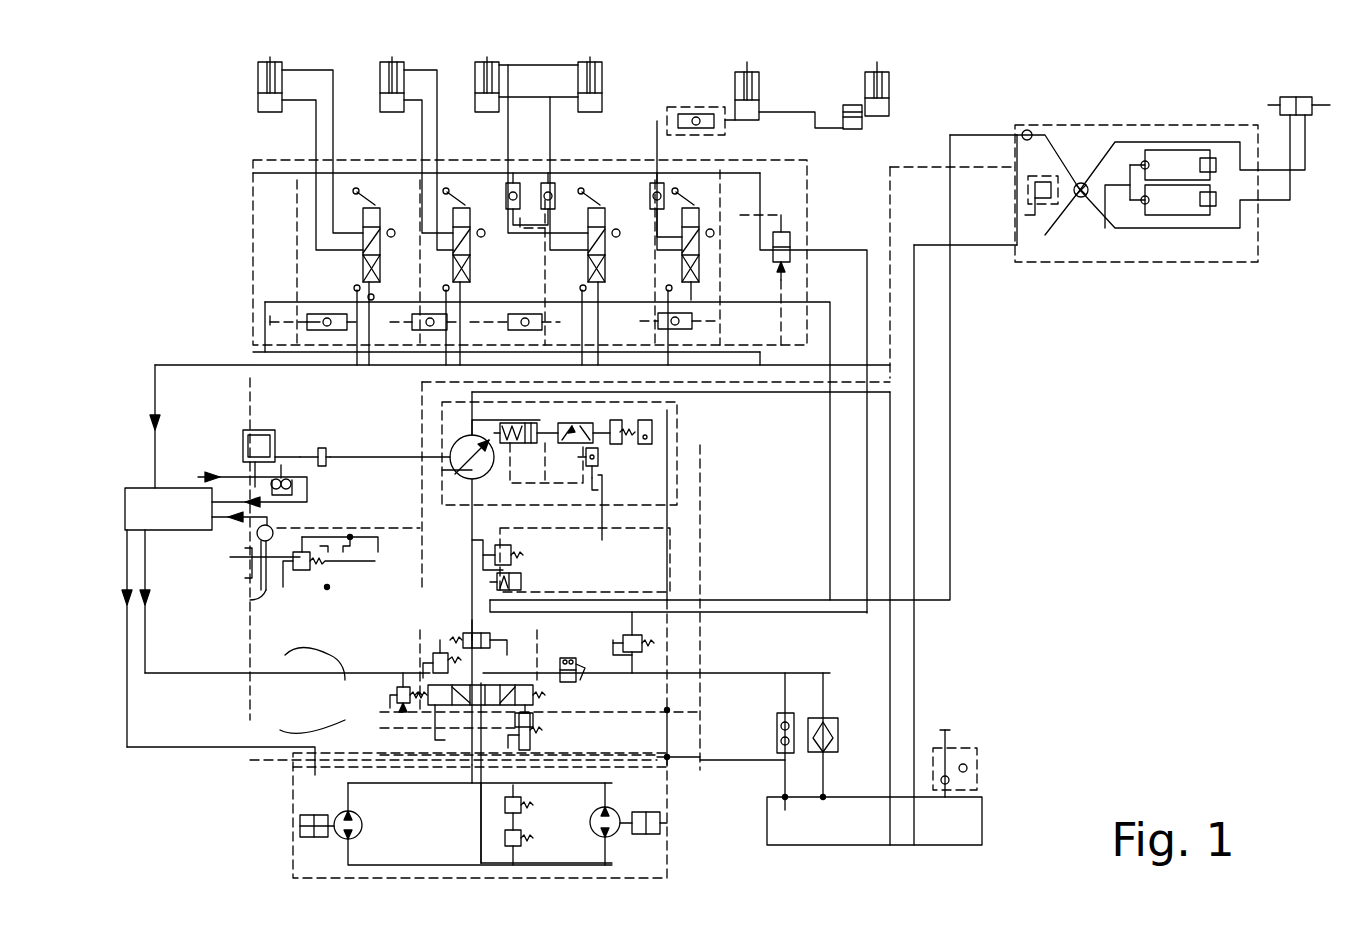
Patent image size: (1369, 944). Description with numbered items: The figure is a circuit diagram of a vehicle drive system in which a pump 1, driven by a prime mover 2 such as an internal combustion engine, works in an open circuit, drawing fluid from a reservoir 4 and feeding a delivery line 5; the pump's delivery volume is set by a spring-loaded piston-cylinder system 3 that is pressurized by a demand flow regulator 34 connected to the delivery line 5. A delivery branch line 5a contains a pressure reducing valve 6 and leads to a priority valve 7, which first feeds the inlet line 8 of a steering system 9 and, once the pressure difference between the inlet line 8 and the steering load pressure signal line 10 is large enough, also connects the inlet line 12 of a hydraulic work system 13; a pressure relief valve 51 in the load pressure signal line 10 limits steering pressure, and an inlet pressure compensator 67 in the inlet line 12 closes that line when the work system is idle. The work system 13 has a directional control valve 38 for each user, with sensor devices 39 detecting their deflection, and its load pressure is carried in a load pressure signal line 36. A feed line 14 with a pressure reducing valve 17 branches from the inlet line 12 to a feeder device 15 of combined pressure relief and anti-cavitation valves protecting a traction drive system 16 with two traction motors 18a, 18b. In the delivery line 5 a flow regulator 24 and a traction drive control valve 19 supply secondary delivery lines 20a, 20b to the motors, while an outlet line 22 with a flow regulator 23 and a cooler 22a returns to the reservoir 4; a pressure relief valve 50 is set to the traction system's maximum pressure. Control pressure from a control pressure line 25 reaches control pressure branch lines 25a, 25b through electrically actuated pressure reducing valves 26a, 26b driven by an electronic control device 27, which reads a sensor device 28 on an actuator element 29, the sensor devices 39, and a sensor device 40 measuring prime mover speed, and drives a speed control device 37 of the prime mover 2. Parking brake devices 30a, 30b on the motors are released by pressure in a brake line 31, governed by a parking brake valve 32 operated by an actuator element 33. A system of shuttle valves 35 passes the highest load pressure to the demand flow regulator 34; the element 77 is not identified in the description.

The pump 1 is at (450, 455).
The prime mover 2 is at (258, 430).
The spring-loaded piston-cylinder system 3 is at (460, 410).
The reservoir 4 is at (985, 815).
The delivery line 5 is at (440, 518).
The delivery branch line 5a is at (515, 545).
The pressure reducing valve 6 is at (602, 540).
The priority valve 7 is at (521, 582).
The inlet line 8 is at (628, 590).
The steering system 9 is at (1104, 247).
The load pressure signal line 10 is at (780, 365).
The inlet line 12 is at (770, 630).
The hydraulic work system 13 is at (822, 182).
The feed line 14 is at (633, 738).
The feeder device 15 is at (490, 828).
The traction drive system 16 is at (275, 866).
The pressure reducing valve 17 is at (732, 650).
The traction motor 18a is at (365, 840).
The traction motor 18b is at (640, 835).
The traction drive control valve 19 is at (437, 712).
The secondary delivery line 20a is at (470, 775).
The secondary delivery line 20b is at (480, 850).
The outlet line 22 is at (648, 640).
The cooler 22a is at (867, 728).
The flow regulator 23 is at (580, 680).
The flow regulator 24 is at (498, 640).
The control pressure line 25 is at (390, 528).
The control pressure branch line 25a is at (287, 658).
The control pressure branch line 25b is at (236, 731).
The pressure reducing valve 26a is at (397, 700).
The pressure reducing valve 26b is at (548, 736).
The electronic control device 27 is at (727, 697).
The sensor device 28 is at (273, 530).
The actuator element 29 is at (252, 600).
The parking brake device 30a is at (300, 826).
The parking brake device 30b is at (665, 820).
The brake line 31 is at (310, 748).
The parking brake valve 32 is at (300, 570).
The actuator element 33 is at (240, 557).
The demand flow regulator 34 is at (598, 452).
The system of shuttle valves 35 is at (660, 432).
The load pressure signal line 36 is at (755, 380).
The speed control device 37 is at (281, 465).
The directional control valve 38 is at (372, 200).
The sensor device 39 is at (340, 297).
The sensor device 40 is at (322, 448).
The pressure relief valve 50 is at (435, 652).
The pressure relief valve 51 is at (1028, 192).
The inlet pressure compensator 67 is at (790, 247).
The line 77 is at (472, 650).